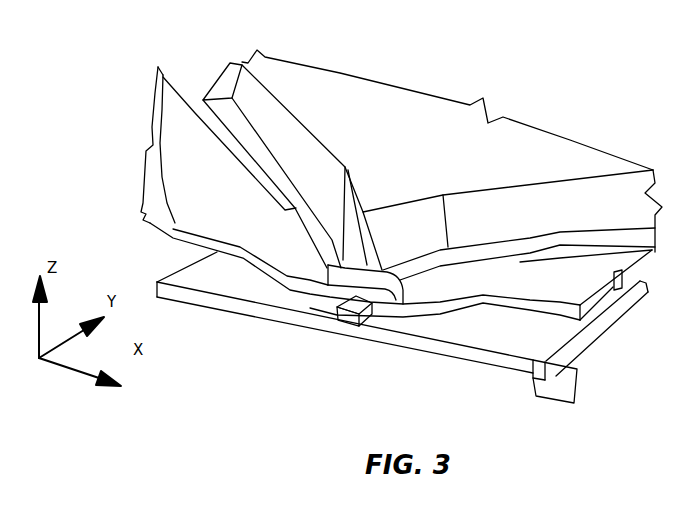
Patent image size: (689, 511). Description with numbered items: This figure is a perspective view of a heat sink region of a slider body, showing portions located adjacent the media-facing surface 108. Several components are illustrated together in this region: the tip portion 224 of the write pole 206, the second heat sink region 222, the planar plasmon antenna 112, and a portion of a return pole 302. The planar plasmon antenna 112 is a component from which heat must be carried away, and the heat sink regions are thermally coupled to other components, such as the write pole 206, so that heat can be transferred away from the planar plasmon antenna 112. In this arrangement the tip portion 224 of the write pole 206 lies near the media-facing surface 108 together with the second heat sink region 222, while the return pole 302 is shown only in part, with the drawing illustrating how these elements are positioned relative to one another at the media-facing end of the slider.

The media-facing surface 108 is at (570, 403).
The planar plasmon antenna 112 is at (346, 321).
The write pole 206 is at (218, 87).
The second heat sink region 222 is at (178, 108).
The tip portion 224 is at (336, 313).
The return pole 302 is at (444, 113).